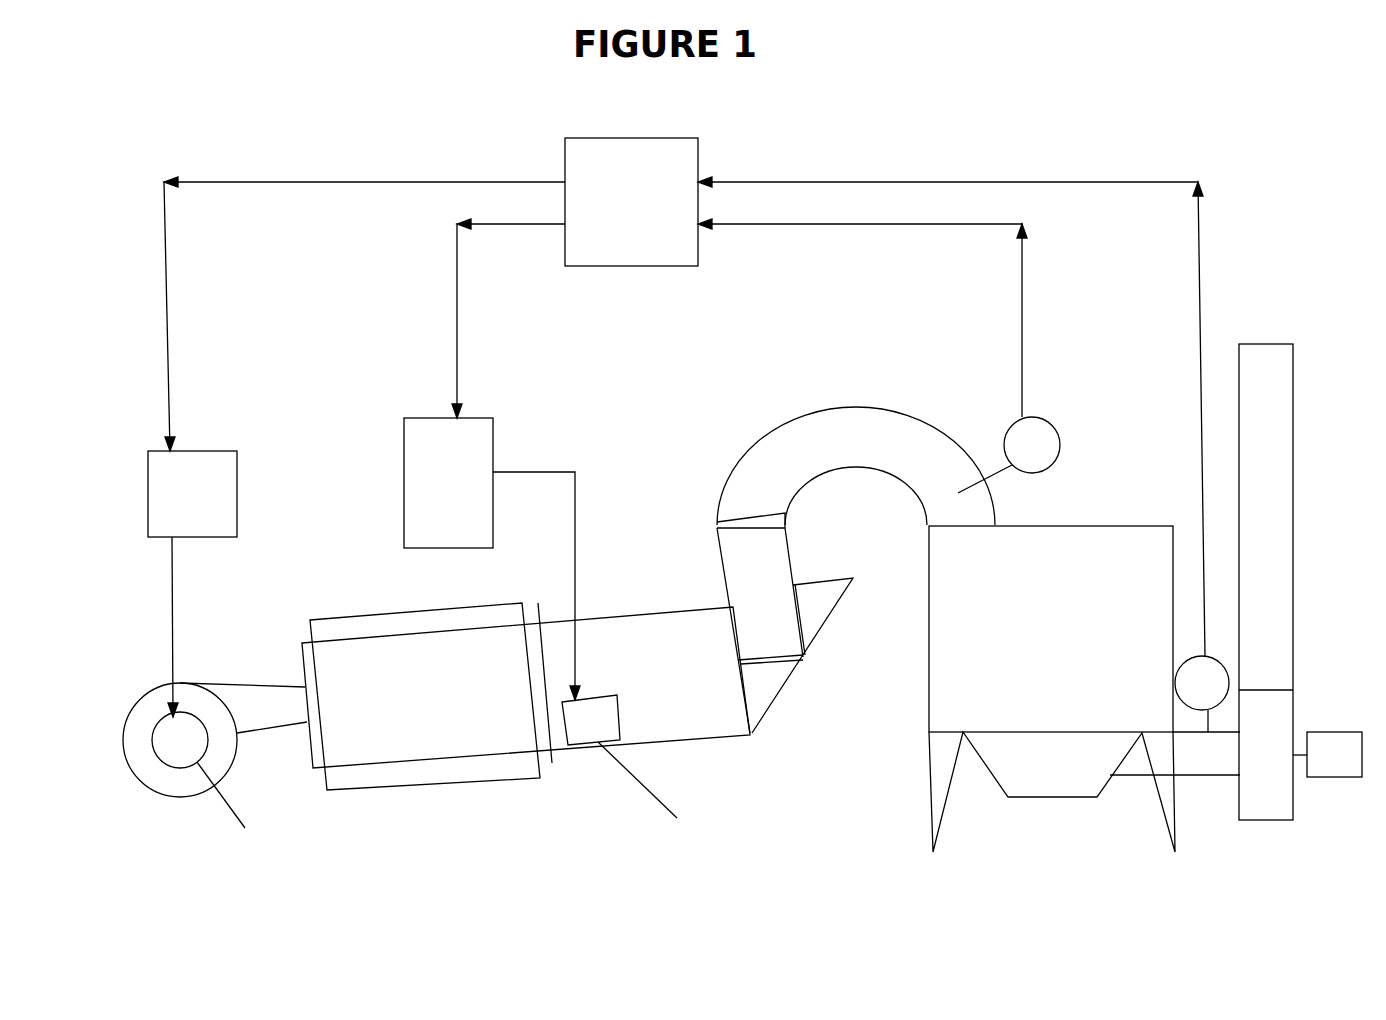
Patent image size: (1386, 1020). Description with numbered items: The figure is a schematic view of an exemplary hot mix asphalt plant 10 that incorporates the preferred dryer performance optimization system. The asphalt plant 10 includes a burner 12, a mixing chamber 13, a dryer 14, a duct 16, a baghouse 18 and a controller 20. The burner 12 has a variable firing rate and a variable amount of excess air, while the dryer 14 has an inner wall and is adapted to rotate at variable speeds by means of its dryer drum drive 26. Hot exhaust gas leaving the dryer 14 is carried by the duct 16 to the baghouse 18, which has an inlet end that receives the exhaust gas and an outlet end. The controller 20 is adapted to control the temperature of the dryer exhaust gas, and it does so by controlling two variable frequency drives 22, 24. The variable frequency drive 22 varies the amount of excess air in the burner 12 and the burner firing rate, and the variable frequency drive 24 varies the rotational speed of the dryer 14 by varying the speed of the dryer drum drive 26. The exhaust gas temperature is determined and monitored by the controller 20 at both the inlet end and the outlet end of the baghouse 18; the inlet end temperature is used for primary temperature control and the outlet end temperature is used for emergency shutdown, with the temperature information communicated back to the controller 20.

The asphalt plant 10 is at (560, 812).
The burner 12 is at (152, 788).
The mixing chamber 13 is at (360, 617).
The dryer 14 is at (623, 610).
The duct 16 is at (822, 407).
The baghouse 18 is at (1102, 526).
The controller 20 is at (615, 266).
The variable frequency drive 22 is at (212, 451).
The variable frequency drive 24 is at (428, 418).
The dryer drum drive 26 is at (620, 720).